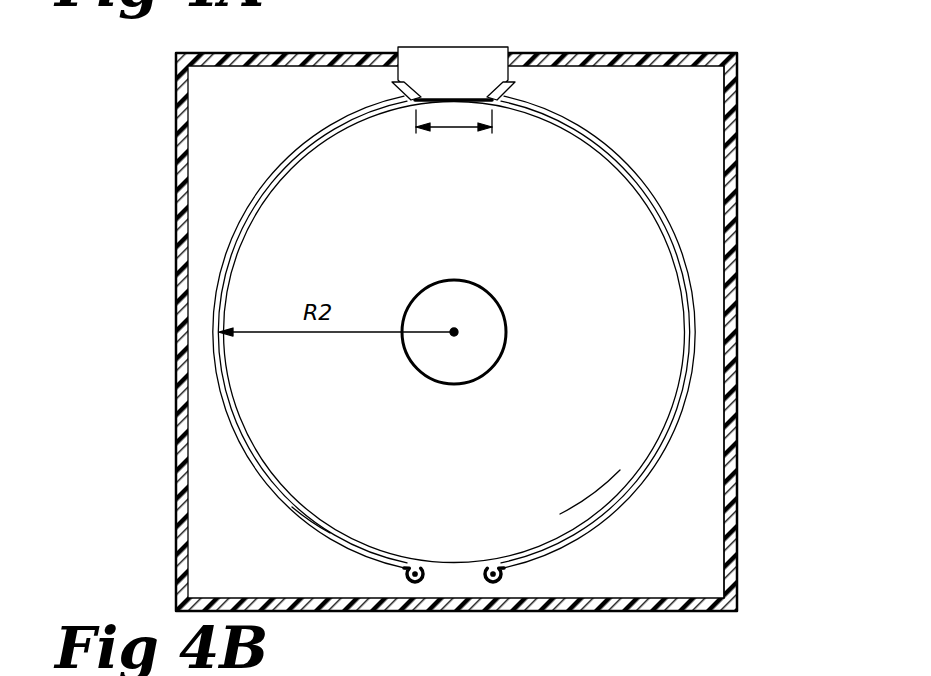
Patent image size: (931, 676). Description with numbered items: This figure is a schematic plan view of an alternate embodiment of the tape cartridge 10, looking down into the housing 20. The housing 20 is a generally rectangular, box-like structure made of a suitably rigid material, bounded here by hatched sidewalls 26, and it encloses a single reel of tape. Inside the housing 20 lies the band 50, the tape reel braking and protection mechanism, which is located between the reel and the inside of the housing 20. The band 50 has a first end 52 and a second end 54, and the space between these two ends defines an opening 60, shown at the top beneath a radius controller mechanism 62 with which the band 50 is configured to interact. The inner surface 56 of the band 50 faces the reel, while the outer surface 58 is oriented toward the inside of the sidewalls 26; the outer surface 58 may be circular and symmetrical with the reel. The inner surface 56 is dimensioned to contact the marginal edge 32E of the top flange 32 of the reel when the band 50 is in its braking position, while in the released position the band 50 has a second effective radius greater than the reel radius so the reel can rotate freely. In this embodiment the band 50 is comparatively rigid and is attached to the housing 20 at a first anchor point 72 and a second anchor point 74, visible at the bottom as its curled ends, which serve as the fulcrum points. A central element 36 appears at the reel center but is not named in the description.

The cartridge 10 is at (113, 223).
The housing 20 is at (742, 351).
The sidewalls 26 is at (738, 440).
The top flange 32 is at (326, 536).
The marginal edge of top flange 32E is at (292, 507).
The hub 36 is at (490, 341).
The band 50 is at (645, 481).
The first end 52 is at (518, 93).
The second end 54 is at (398, 92).
The inner surface 56 is at (618, 498).
The outer surface 58 is at (593, 530).
The opening 60 is at (454, 134).
The radius controller mechanism 62 is at (432, 51).
The first anchor point 72 is at (493, 584).
The second anchor point 74 is at (413, 584).